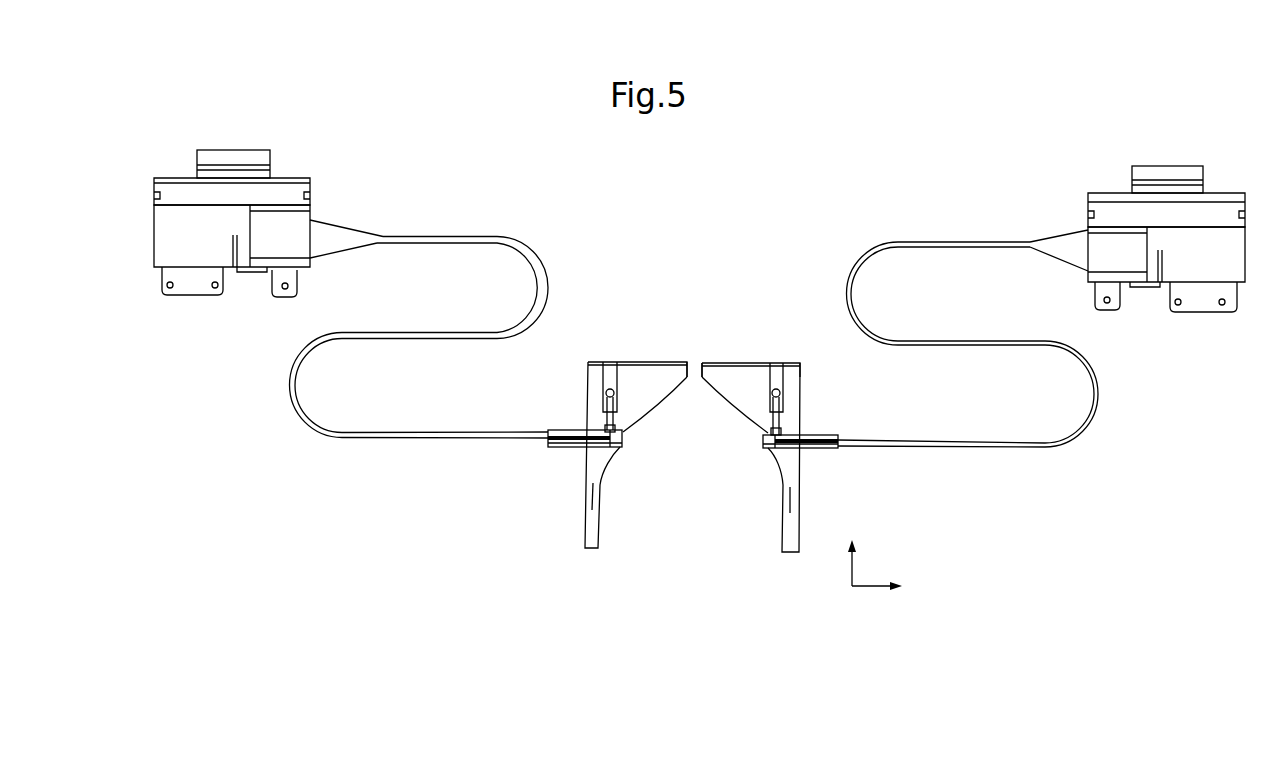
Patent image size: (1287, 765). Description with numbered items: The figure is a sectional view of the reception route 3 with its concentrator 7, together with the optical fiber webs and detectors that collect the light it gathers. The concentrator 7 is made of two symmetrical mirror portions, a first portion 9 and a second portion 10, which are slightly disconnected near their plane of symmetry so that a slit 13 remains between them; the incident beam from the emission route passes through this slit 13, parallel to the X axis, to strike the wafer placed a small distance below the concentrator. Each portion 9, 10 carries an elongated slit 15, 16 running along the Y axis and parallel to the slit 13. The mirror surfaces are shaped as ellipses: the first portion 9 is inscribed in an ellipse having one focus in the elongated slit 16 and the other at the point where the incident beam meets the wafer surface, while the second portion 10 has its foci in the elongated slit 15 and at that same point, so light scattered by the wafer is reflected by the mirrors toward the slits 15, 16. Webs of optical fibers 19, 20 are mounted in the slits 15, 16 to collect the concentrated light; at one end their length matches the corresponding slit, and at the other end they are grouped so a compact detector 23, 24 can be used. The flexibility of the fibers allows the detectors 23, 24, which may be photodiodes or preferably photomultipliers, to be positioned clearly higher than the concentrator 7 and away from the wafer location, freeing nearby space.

The reception route 3 is at (831, 156).
The concentrator 7 is at (643, 350).
The first portion 9 is at (670, 392).
The second portion 10 is at (781, 497).
The slit 13 is at (694, 358).
The elongated slit 15 is at (627, 447).
The elongated slit 16 is at (762, 446).
The web of optical fibers 19 is at (492, 236).
The web of optical fibers 20 is at (923, 242).
The detector 23 is at (268, 223).
The detector 24 is at (1137, 239).